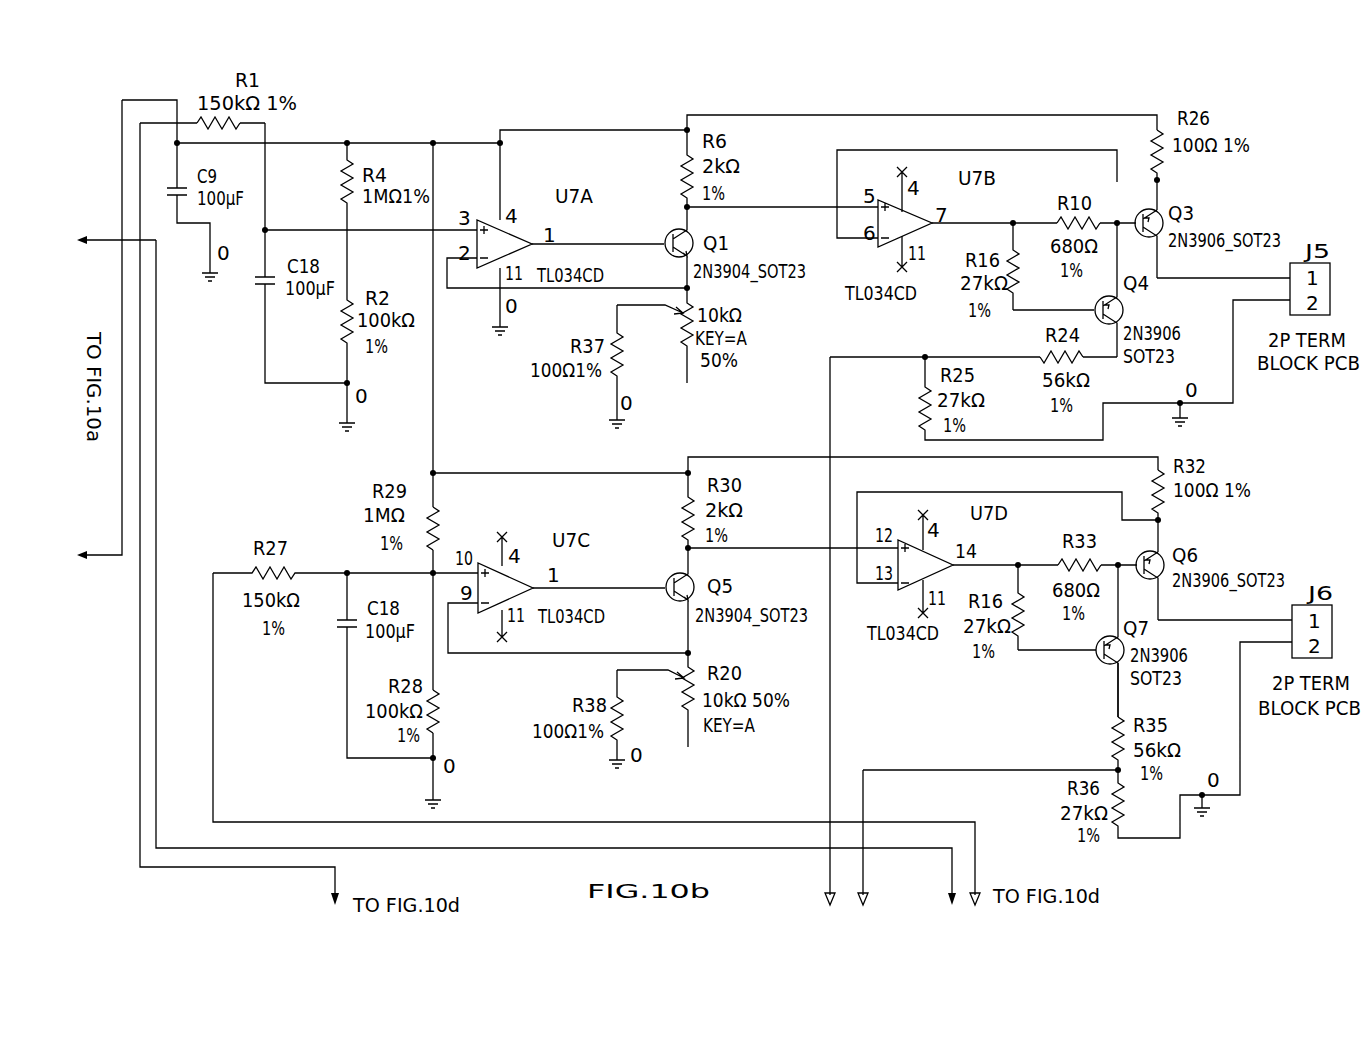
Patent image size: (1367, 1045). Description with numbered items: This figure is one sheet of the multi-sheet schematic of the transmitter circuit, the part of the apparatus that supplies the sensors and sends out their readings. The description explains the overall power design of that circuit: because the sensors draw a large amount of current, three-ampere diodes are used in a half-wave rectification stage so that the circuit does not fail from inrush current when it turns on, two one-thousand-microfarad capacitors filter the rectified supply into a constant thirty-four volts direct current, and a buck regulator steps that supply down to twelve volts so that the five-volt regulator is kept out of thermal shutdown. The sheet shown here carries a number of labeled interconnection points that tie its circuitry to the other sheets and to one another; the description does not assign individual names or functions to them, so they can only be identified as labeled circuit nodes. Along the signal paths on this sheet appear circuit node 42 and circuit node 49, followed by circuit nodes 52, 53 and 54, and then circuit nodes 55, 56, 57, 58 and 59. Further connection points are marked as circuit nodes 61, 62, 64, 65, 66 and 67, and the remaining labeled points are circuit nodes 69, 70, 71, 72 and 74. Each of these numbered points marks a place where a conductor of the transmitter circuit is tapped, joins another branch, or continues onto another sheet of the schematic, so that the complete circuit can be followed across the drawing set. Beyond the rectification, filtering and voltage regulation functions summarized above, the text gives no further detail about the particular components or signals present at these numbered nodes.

The node 42 (R24/R25 junction to FIG. 10d) 42 is at (935, 369).
The node 49 (C18/R4 junction, U7A non-inverting input) 49 is at (361, 242).
The potentiometer wiper node 52 is at (650, 318).
The U7A output node 53 (Q1 base) 53 is at (598, 233).
The node 54 (R6/Q1 collector, U7B input) 54 is at (769, 208).
The node 55 (R26/Q3 emitter) 55 is at (1171, 189).
The U7C output node 56 (Q5 base) 56 is at (599, 574).
The node 57 (R30/Q5 collector, U7D input) 57 is at (783, 550).
The node 58 (Q5 emitter feedback) 58 is at (570, 629).
The potentiometer R20 wiper node 59 is at (650, 682).
The node 61 (R32/Q6 emitter) 61 is at (1172, 529).
The node 62 (R33/Q6 base/Q7 emitter) 62 is at (1119, 553).
The U7D output node 64 is at (1005, 555).
The node 65 (R16/Q7 base) 65 is at (1057, 665).
The node 66 (Q7 collector/R35) 66 is at (1111, 690).
The node 67 (Q6 collector to J6 pin 1) 67 is at (1225, 608).
The node 69 (R10/Q3 base/Q4 emitter) 69 is at (1118, 212).
The U7B output node 70 is at (994, 212).
The node 71 (R16/Q4 base) 71 is at (1053, 297).
The node 72 (Q4 collector/R24) 72 is at (1100, 344).
The node 74 (Q3 collector to J5 pin 1) 74 is at (1223, 266).